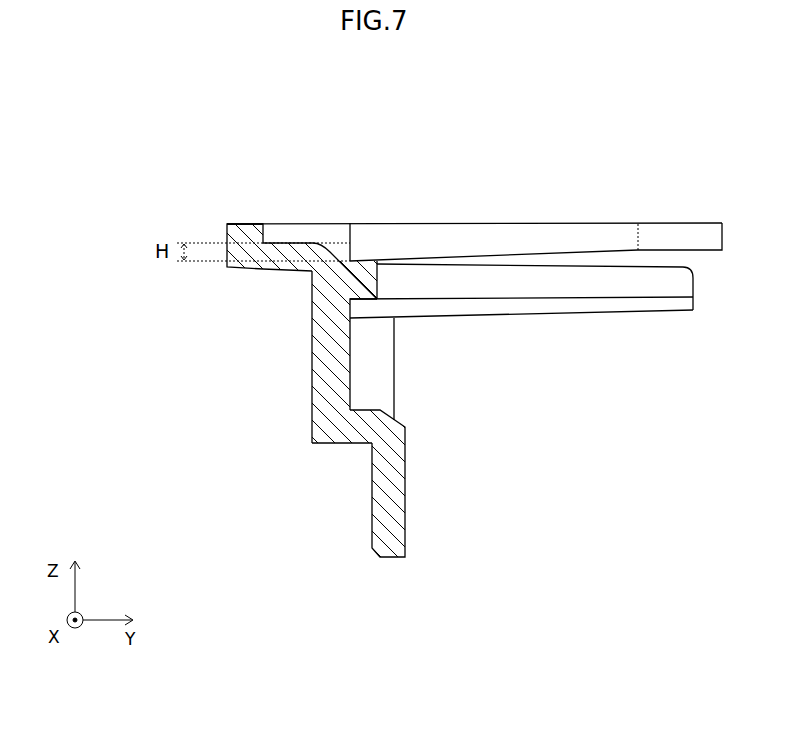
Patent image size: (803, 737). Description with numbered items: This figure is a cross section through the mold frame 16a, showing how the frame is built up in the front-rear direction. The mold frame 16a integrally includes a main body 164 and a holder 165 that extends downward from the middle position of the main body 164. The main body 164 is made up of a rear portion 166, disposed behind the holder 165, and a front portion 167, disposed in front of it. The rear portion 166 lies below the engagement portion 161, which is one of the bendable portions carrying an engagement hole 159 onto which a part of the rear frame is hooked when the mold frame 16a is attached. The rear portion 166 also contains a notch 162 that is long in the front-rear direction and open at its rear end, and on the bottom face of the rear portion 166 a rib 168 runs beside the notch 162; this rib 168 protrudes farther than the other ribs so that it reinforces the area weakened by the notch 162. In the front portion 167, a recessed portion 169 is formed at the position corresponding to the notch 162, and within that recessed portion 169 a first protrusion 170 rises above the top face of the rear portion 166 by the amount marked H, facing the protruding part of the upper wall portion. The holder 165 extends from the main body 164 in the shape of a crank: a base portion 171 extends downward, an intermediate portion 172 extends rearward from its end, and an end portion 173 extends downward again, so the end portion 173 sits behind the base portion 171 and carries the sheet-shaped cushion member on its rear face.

The mold frame 16a is at (213, 192).
The engagement hole 159 is at (432, 252).
The engagement portion 161 is at (682, 235).
The notch 162 is at (543, 273).
The main body 164 is at (150, 330).
The holder 165 is at (350, 602).
The rear portion 166 is at (365, 282).
The front portion 167 is at (240, 268).
The rib 168 is at (667, 303).
The recessed portion 169 is at (265, 222).
The first protrusion 170 is at (322, 243).
The base portion 171 is at (335, 380).
The intermediate portion 172 is at (353, 427).
The end portion 173 is at (393, 495).